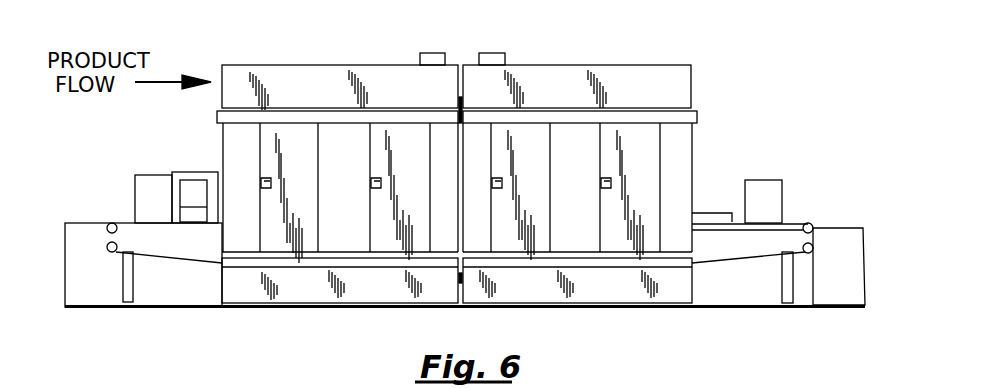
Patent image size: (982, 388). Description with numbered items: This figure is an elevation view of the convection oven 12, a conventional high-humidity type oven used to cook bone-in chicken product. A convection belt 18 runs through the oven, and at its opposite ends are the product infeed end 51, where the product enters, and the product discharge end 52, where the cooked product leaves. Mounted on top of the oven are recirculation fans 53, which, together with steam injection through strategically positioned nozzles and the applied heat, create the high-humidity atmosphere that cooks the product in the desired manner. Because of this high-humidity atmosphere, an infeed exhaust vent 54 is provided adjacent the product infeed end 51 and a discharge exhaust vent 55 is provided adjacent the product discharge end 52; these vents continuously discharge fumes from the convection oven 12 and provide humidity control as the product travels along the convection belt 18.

The convection oven 12 is at (703, 104).
The convection belt 18 is at (795, 221).
The product infeed end 51 is at (96, 221).
The product discharge end 52 is at (824, 223).
The recirculation fans 53 is at (496, 52).
The infeed exhaust vent 54 is at (183, 168).
The discharge exhaust vent 55 is at (780, 170).